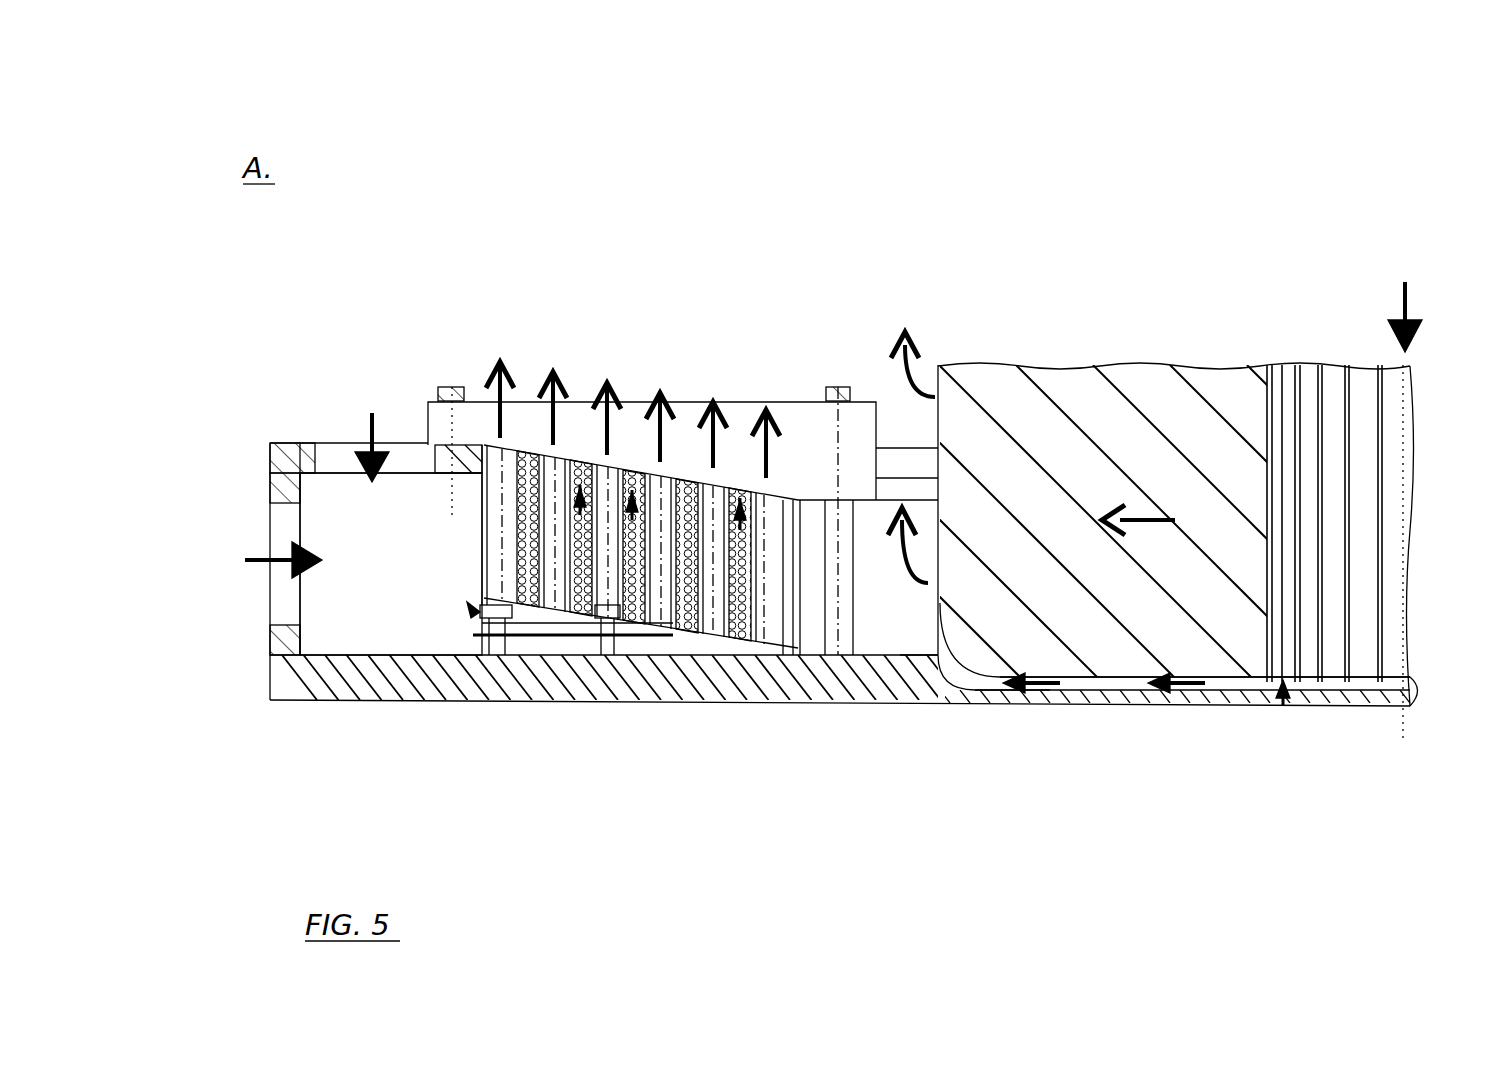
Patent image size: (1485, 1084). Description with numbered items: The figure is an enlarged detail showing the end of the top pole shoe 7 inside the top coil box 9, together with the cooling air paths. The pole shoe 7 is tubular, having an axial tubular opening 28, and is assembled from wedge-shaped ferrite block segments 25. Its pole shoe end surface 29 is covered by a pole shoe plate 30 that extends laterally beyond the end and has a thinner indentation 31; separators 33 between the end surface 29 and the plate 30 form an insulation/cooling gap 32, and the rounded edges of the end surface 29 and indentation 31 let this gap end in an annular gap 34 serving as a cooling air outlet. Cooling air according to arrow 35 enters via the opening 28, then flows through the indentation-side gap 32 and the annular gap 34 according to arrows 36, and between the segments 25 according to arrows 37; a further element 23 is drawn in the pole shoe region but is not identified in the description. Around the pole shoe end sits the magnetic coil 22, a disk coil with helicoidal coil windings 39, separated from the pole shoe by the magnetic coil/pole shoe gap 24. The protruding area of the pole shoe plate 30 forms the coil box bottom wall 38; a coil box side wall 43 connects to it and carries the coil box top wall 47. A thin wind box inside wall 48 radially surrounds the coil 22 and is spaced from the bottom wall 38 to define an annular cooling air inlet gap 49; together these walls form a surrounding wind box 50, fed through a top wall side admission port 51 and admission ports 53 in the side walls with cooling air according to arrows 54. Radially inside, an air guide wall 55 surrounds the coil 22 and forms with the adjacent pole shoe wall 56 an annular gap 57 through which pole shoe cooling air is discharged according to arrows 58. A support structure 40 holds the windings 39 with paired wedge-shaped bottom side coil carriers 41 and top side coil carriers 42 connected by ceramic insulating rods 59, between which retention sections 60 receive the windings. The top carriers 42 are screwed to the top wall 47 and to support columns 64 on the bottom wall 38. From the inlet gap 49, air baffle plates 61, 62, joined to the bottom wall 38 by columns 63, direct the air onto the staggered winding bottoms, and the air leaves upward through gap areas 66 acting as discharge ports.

The top pole shoe 7 is at (1098, 352).
The top coil box 9 is at (383, 240).
The magnetic coil 22 is at (740, 500).
The cooler fins 23 is at (1238, 422).
The magnetic coil/pole shoe gap 24 is at (905, 372).
The ferrite block segments 25 is at (1325, 706).
The axial tubular opening 28 is at (1366, 430).
The pole shoe end surface 29 is at (1245, 706).
The pole shoe plate 30 is at (1365, 706).
The indentation 31 is at (1415, 706).
The insulation/cooling gap 32 is at (1287, 706).
The separators 33 is at (1112, 706).
The annular gap 34 is at (915, 704).
The arrow (cooling air supply to pole shoe) 35 is at (1403, 330).
The arrows (cooling air flow through indentation-side gap) 36 is at (1045, 706).
The arrows (cooling air flow through segment gaps) 37 is at (1140, 505).
The coil box bottom wall 38 is at (718, 692).
The coil windings 39 is at (540, 450).
The support structure 40 is at (697, 380).
The bottom side coil carriers 41 is at (527, 656).
The top side coil carriers 42 is at (838, 445).
The coil box side wall 43 is at (280, 440).
The coil box top wall 47 is at (288, 440).
The wind box inside wall 48 is at (472, 525).
The annular cooling air inlet gap 49 is at (472, 612).
The wind box 50 is at (362, 600).
The top wall side admission port 51 is at (335, 443).
The admission ports 53 is at (300, 525).
The arrows (cooling air blown into wind box) 54 is at (385, 410).
The air guide wall 55 is at (818, 702).
The pole shoe wall 56 is at (975, 706).
The annular gap 57 is at (913, 655).
The arrows (pole shoe cooling air discharge) 58 is at (877, 530).
The insulating rods 59 is at (480, 440).
The retention sections 60 is at (582, 480).
The air baffle plate 61 is at (565, 656).
The air baffle plate 62 is at (507, 656).
The columns 63 is at (462, 656).
The support columns 64 is at (845, 702).
The gap areas 66 is at (673, 368).